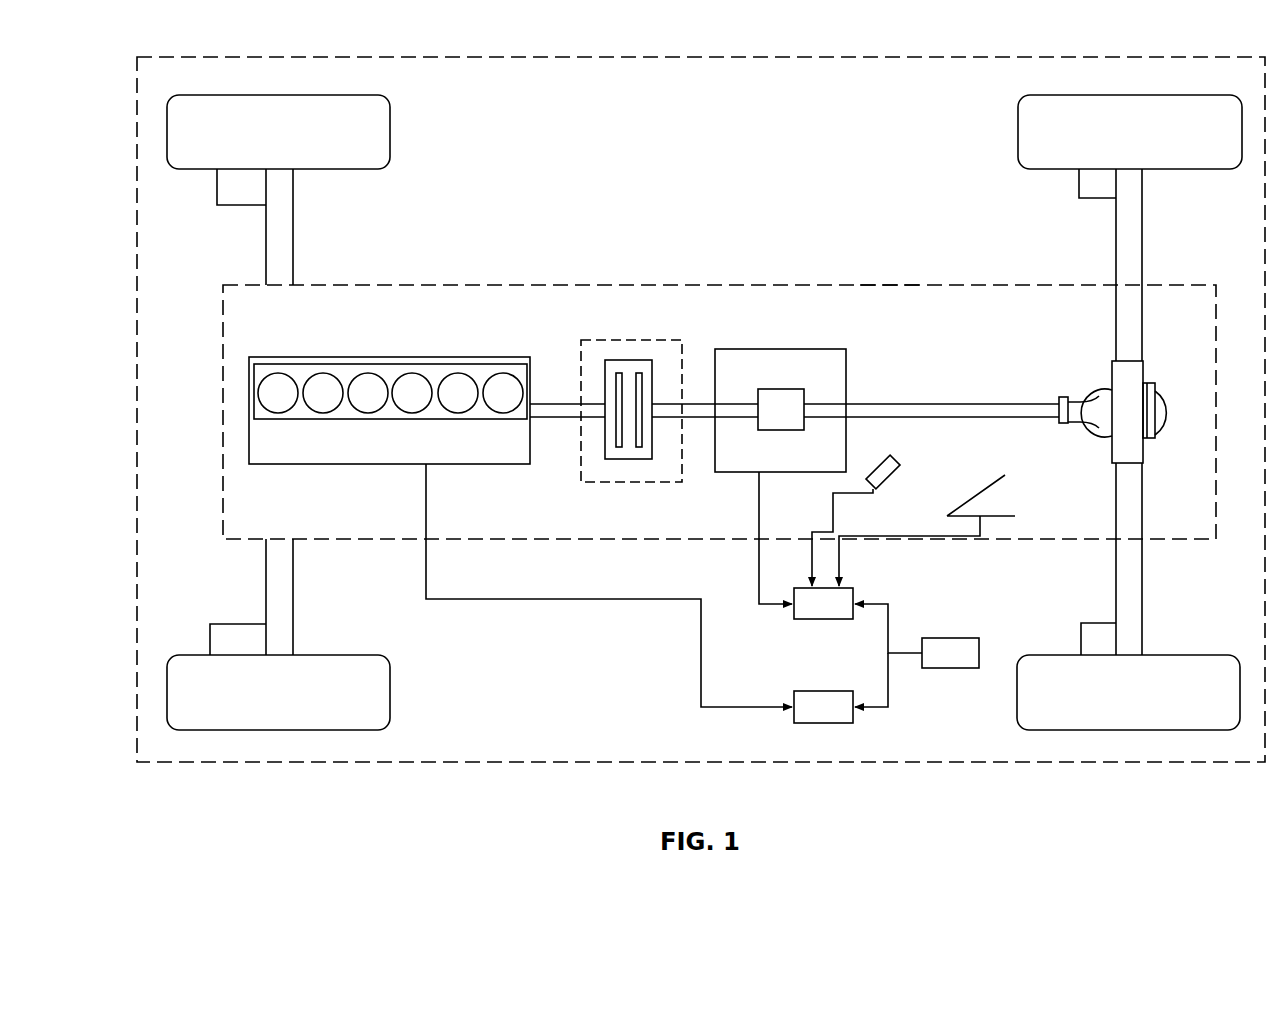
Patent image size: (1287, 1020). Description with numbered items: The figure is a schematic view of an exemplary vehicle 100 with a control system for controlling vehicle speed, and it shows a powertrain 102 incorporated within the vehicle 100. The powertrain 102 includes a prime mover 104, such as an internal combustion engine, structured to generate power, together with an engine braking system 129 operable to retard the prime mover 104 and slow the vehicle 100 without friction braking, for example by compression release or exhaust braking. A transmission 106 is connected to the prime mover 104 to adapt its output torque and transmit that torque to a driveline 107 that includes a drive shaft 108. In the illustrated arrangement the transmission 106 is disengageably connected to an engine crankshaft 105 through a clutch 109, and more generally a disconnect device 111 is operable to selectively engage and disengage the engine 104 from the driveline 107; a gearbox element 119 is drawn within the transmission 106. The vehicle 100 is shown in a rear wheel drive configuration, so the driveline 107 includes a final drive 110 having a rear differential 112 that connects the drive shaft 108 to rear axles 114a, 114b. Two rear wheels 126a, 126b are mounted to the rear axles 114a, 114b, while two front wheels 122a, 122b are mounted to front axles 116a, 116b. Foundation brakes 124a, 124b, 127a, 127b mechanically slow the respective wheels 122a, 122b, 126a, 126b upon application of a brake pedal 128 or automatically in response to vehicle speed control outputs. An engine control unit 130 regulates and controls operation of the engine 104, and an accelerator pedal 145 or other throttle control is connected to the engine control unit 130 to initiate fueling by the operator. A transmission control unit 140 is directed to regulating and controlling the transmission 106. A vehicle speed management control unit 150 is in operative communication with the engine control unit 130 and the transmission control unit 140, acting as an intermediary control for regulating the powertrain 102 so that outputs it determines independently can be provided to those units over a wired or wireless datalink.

The vehicle 100 is at (978, 53).
The powertrain 102 is at (965, 285).
The prime mover 104 is at (409, 456).
The engine crankshaft 105 is at (567, 420).
The transmission 106 is at (791, 472).
The driveline 107 is at (882, 297).
The drive shaft 108 is at (932, 418).
The clutch 109 is at (624, 460).
The final drive 110 is at (1188, 430).
The disconnect device 111 is at (600, 336).
The rear differential 112 is at (1138, 395).
The rear axle 114a is at (1143, 218).
The rear axle 114b is at (1143, 603).
The front axle 116a is at (293, 218).
The front axle 116b is at (293, 605).
The transmission gearbox 119 is at (783, 389).
The front wheel 122a is at (302, 143).
The front wheel 122b is at (302, 704).
The foundation brake 124a is at (217, 197).
The foundation brake 124b is at (238, 624).
The rear wheel 126a is at (1153, 143).
The rear wheel 126b is at (1152, 703).
The foundation brake 127a is at (1090, 198).
The foundation brake 127b is at (1100, 623).
The brake pedal 128 is at (876, 462).
The engine braking system 129 is at (327, 363).
The engine control unit 130 is at (823, 691).
The transmission control unit 140 is at (845, 588).
The accelerator pedal 145 is at (983, 490).
The vehicle speed management control unit 150 is at (980, 638).